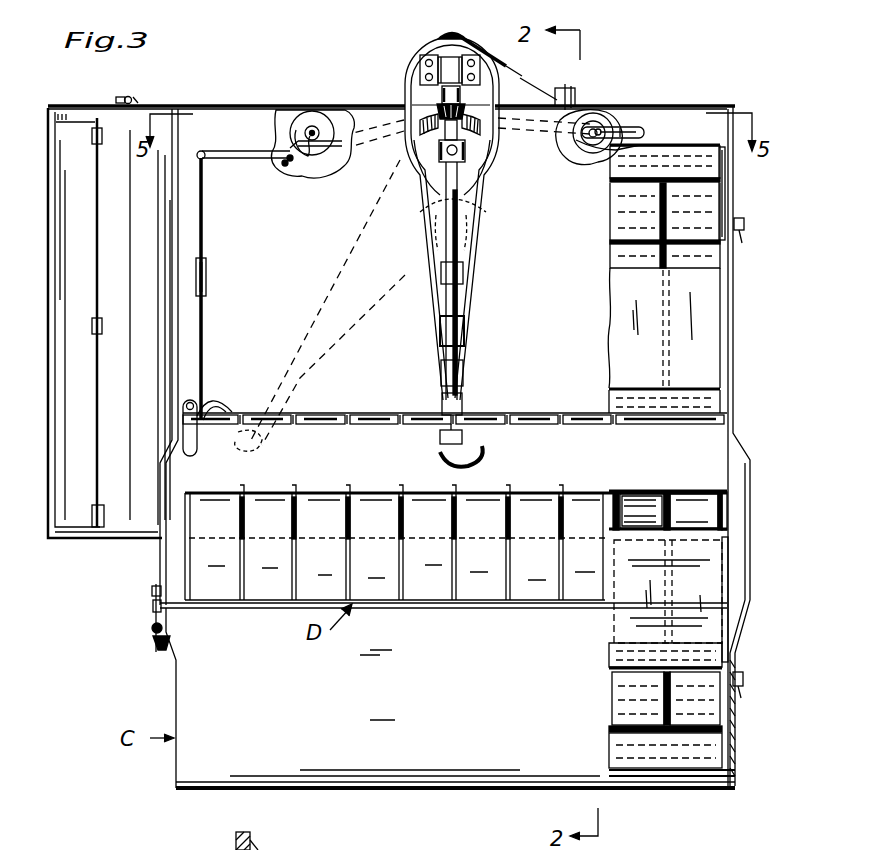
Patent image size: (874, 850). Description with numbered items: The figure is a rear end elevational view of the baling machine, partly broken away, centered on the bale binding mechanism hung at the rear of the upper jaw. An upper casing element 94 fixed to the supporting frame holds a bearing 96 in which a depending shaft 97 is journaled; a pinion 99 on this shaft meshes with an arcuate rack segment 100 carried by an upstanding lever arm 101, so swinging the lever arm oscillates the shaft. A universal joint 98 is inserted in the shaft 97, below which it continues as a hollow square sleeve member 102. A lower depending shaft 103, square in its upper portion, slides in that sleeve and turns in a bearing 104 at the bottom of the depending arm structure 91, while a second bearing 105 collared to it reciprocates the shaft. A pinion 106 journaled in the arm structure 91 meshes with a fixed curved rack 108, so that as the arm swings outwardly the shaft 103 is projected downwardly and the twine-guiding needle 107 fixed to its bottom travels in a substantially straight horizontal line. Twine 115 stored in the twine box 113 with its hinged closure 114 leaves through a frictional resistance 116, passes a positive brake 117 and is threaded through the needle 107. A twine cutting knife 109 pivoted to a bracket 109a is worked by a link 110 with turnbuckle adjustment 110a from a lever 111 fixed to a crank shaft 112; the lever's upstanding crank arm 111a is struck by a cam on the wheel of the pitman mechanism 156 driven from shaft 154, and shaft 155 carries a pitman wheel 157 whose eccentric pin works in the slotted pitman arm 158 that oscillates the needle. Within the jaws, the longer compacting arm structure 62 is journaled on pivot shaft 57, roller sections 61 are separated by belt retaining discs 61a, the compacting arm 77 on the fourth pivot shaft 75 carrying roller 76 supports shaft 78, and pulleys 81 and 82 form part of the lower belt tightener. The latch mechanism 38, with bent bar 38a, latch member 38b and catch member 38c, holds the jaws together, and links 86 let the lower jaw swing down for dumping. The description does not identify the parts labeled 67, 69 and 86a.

The latch mechanism 38 is at (146, 628).
The bent bar 38a is at (152, 643).
The latch member 38b is at (150, 587).
The catch member 38c is at (150, 605).
The pivot shaft 57 is at (652, 394).
The roller sections 61 is at (688, 490).
The belt retaining discs 61a is at (616, 490).
The arm structure 62 is at (628, 316).
The drawer unit 67 is at (672, 158).
The supporting pads 69 is at (676, 148).
The fourth pivot shaft 75 is at (614, 649).
The roller 76 is at (612, 667).
The compacting arm 77 is at (680, 590).
The shaft 78 is at (660, 512).
The pulley 81 is at (614, 745).
The pulley 82 is at (614, 687).
The links 86 is at (252, 842).
The caster wheel 86a is at (272, 841).
The depending arm structure 91 is at (420, 256).
The upper casing element 94 is at (506, 67).
The bearing 96 is at (420, 74).
The depending shaft 97 is at (461, 92).
The universal joint 98 is at (466, 150).
The pinion 99 is at (437, 110).
The arcuate rack segment 100 is at (422, 118).
The lever arm 101 is at (440, 148).
The square sleeve member 102 is at (460, 198).
The lower depending shaft 103 is at (463, 268).
The bearing 104 is at (463, 400).
The second bearing 105 is at (464, 329).
The pinion 106 is at (436, 246).
The twine-guiding needle 107 is at (472, 447).
The fixed rack 108 is at (420, 214).
The twine cutting knife 109 is at (212, 416).
The bracket 109a is at (208, 450).
The link 110 is at (204, 238).
The turnbuckle adjustment 110a is at (206, 273).
The lever 111 is at (260, 152).
The crank arm 111a is at (298, 139).
The crank shaft 112 is at (286, 162).
The twine box 113 is at (140, 530).
The hinged closure 114 is at (74, 430).
The twine 115 is at (232, 105).
The frictional resistance 116 is at (124, 100).
The positive brake 117 is at (568, 90).
The shaft 154 is at (313, 125).
The shaft 155 is at (592, 150).
The pitman mechanism 156 is at (322, 150).
The pitman wheel 157 is at (598, 108).
The pitman arm 158 is at (572, 135).